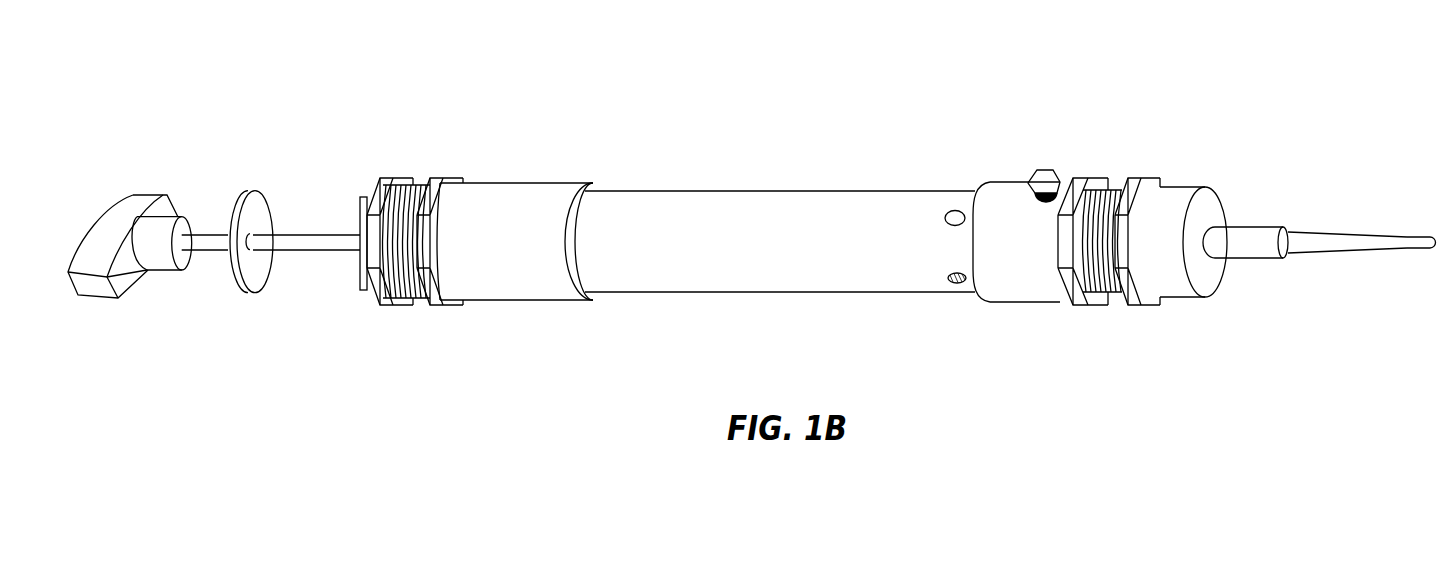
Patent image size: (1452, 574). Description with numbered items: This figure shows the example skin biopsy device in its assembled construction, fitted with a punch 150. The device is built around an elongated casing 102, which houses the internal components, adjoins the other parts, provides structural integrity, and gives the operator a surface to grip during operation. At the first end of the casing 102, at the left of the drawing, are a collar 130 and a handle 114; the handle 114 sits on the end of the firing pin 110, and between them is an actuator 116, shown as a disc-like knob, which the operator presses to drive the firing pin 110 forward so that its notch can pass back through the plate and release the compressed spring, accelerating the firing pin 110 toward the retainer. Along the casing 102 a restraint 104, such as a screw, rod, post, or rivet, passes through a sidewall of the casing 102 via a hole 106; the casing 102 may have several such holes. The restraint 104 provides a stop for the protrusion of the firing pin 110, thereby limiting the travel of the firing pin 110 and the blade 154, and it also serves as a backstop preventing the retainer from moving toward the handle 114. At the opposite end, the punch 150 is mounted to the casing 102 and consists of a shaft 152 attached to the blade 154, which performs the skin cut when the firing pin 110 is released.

The casing 102 is at (655, 208).
The restraint 104 is at (1042, 185).
The hole 106 is at (955, 207).
The firing pin 110 is at (310, 187).
The handle 114 is at (145, 190).
The actuator 116 is at (245, 188).
The collar 130 is at (403, 155).
The punch 150 is at (1247, 179).
The shaft 152 is at (1258, 223).
The blade 154 is at (1417, 236).